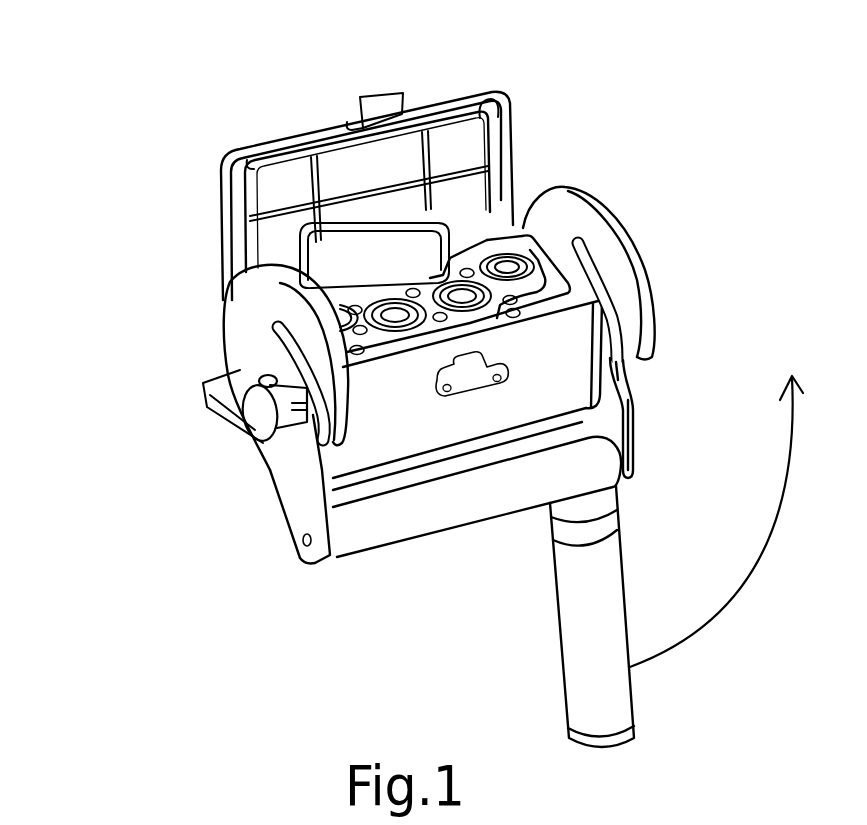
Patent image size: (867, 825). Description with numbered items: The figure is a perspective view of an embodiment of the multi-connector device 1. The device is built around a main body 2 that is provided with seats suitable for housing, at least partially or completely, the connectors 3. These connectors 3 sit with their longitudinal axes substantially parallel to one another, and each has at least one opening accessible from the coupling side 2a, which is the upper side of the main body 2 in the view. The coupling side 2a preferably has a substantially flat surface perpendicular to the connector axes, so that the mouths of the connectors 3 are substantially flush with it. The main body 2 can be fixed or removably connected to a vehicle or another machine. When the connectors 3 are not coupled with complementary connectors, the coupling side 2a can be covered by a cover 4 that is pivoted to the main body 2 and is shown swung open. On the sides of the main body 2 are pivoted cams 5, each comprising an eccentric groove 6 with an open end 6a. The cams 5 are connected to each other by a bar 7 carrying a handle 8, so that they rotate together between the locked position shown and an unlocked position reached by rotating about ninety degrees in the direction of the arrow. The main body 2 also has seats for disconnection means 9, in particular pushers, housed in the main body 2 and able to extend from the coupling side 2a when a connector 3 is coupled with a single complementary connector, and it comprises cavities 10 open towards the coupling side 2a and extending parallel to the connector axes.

The multi-connector device 1 is at (148, 226).
The main body 2 is at (560, 390).
The coupling side 2a is at (576, 280).
The connector 3 is at (507, 255).
The cover 4 is at (453, 110).
The cam 5 is at (243, 322).
The eccentric groove 6 is at (230, 392).
The open end 6a is at (330, 450).
The bar 7 is at (410, 523).
The handle 8 is at (577, 580).
The disconnection means 9 is at (405, 355).
The cavity 10 is at (290, 405).